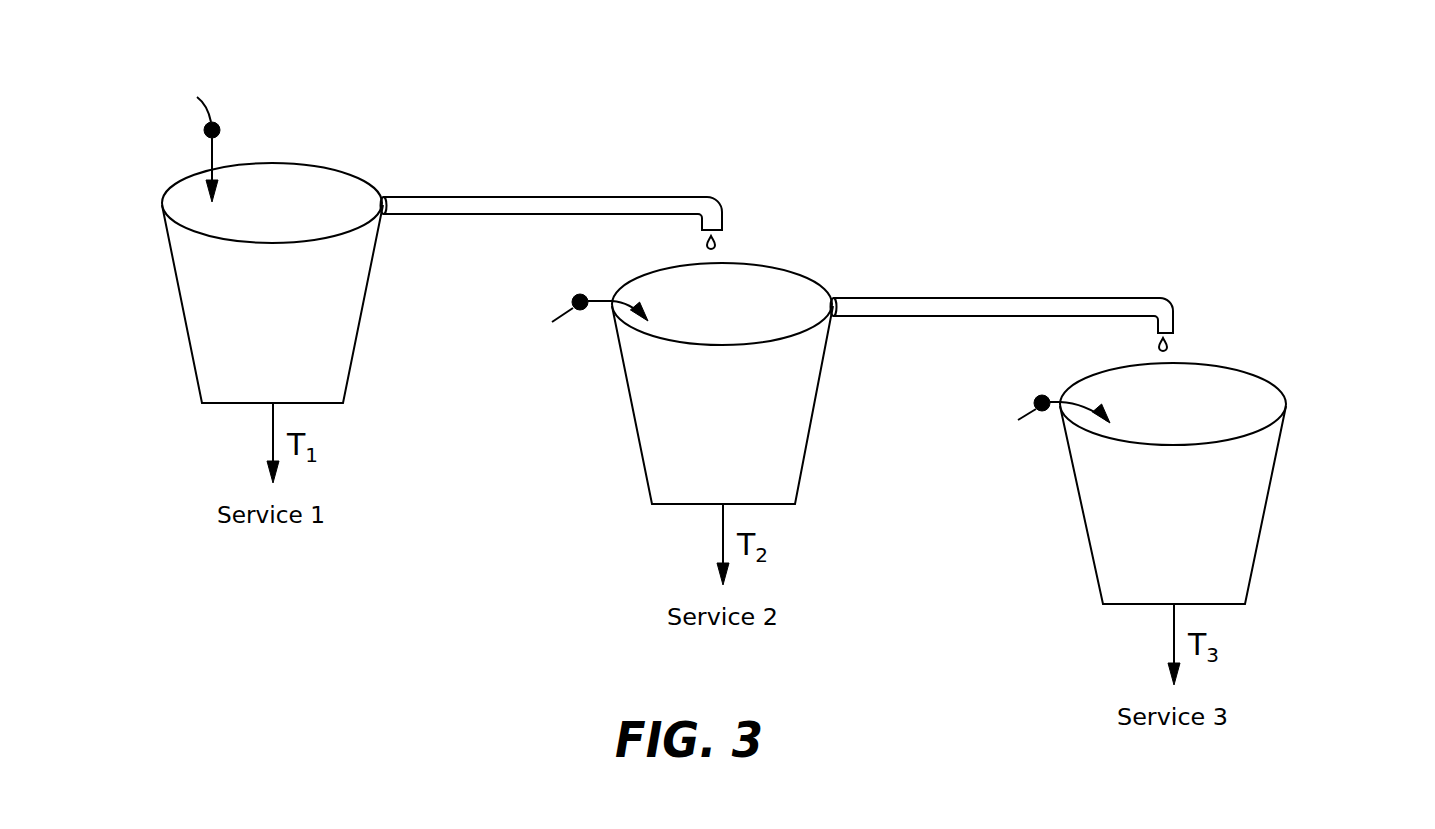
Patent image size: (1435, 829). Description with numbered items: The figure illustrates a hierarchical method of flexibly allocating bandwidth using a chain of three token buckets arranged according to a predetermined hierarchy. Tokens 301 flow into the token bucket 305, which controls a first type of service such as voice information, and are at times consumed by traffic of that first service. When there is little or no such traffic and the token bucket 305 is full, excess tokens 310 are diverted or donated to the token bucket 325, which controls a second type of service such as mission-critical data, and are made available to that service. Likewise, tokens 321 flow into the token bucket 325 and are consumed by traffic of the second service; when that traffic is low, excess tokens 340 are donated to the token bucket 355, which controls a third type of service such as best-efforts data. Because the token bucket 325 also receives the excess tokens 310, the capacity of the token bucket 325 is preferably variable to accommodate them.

The tokens 301 is at (215, 124).
The token bucket 305 is at (198, 373).
The excess tokens 310 is at (718, 243).
The tokens 321 is at (572, 296).
The token bucket 325 is at (650, 473).
The excess tokens 340 is at (1169, 345).
The token bucket 355 is at (1100, 573).